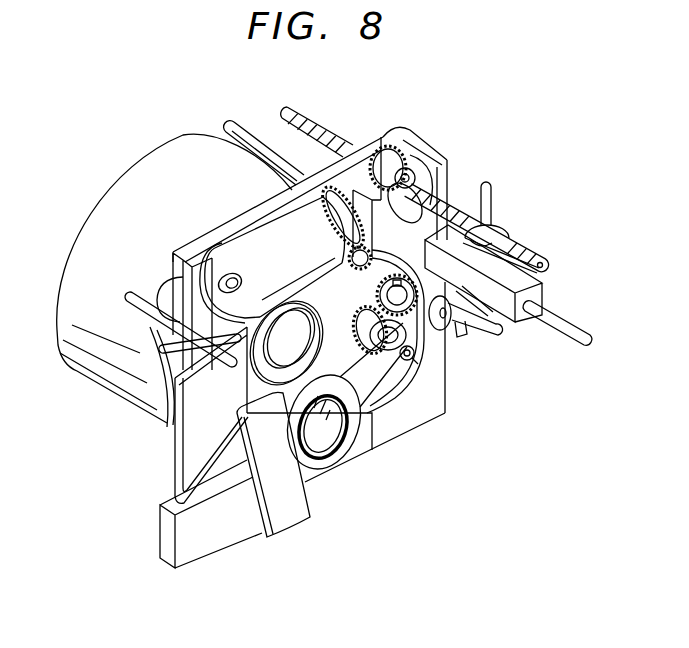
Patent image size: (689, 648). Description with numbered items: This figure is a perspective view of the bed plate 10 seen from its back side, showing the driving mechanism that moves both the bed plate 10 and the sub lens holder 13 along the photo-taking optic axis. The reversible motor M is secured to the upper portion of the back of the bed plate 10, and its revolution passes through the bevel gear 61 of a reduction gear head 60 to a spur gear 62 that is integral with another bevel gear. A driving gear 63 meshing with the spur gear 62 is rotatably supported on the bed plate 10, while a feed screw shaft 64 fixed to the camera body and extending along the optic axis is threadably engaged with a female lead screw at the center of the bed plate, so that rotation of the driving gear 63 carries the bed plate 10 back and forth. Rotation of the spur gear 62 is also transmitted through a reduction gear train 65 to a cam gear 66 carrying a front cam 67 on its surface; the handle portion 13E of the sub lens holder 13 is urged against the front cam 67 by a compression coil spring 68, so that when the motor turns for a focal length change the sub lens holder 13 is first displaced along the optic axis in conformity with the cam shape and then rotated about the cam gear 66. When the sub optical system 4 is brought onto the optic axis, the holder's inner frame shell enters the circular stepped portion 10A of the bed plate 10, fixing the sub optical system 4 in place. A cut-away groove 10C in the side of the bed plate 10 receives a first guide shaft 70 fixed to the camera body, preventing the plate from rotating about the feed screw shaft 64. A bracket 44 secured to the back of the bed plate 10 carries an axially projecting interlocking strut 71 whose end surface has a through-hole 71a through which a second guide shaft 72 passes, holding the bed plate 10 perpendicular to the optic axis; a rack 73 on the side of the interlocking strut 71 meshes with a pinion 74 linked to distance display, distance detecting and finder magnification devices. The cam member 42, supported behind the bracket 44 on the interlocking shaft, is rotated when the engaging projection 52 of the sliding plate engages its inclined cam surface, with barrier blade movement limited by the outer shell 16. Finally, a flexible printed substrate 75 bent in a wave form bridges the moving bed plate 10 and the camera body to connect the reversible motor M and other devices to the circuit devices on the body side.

The outer shell 16 is at (72, 247).
The bed plate 10 is at (184, 252).
The circular stepped portion 10A is at (247, 385).
The cut-away groove 10C is at (147, 343).
The first guide shaft 70 is at (132, 298).
The flexible printed substrate 75 is at (174, 463).
The reduction gear head 60 is at (278, 188).
The spur gear 62 is at (305, 168).
The reversible motor M is at (270, 260).
The bevel gear 61 is at (326, 228).
The reduction gear train 65 is at (352, 264).
The cam gear 66 is at (357, 333).
The front cam 67 is at (410, 342).
The compression coil spring 68 is at (409, 372).
The driving gear 63 is at (377, 130).
The interlocking strut 71 is at (424, 228).
The feed screw shaft 64 is at (314, 117).
The pinion 74 is at (493, 223).
The rack 73 is at (533, 251).
The through-hole 71a is at (542, 292).
The second guide shaft 72 is at (580, 342).
The cam member 42 is at (500, 336).
The engaging projection 52 is at (460, 331).
The bracket 44 is at (447, 396).
The handle portion 13E is at (385, 385).
The sub lens holder 13 is at (327, 470).
The sub optical system 4 is at (332, 420).